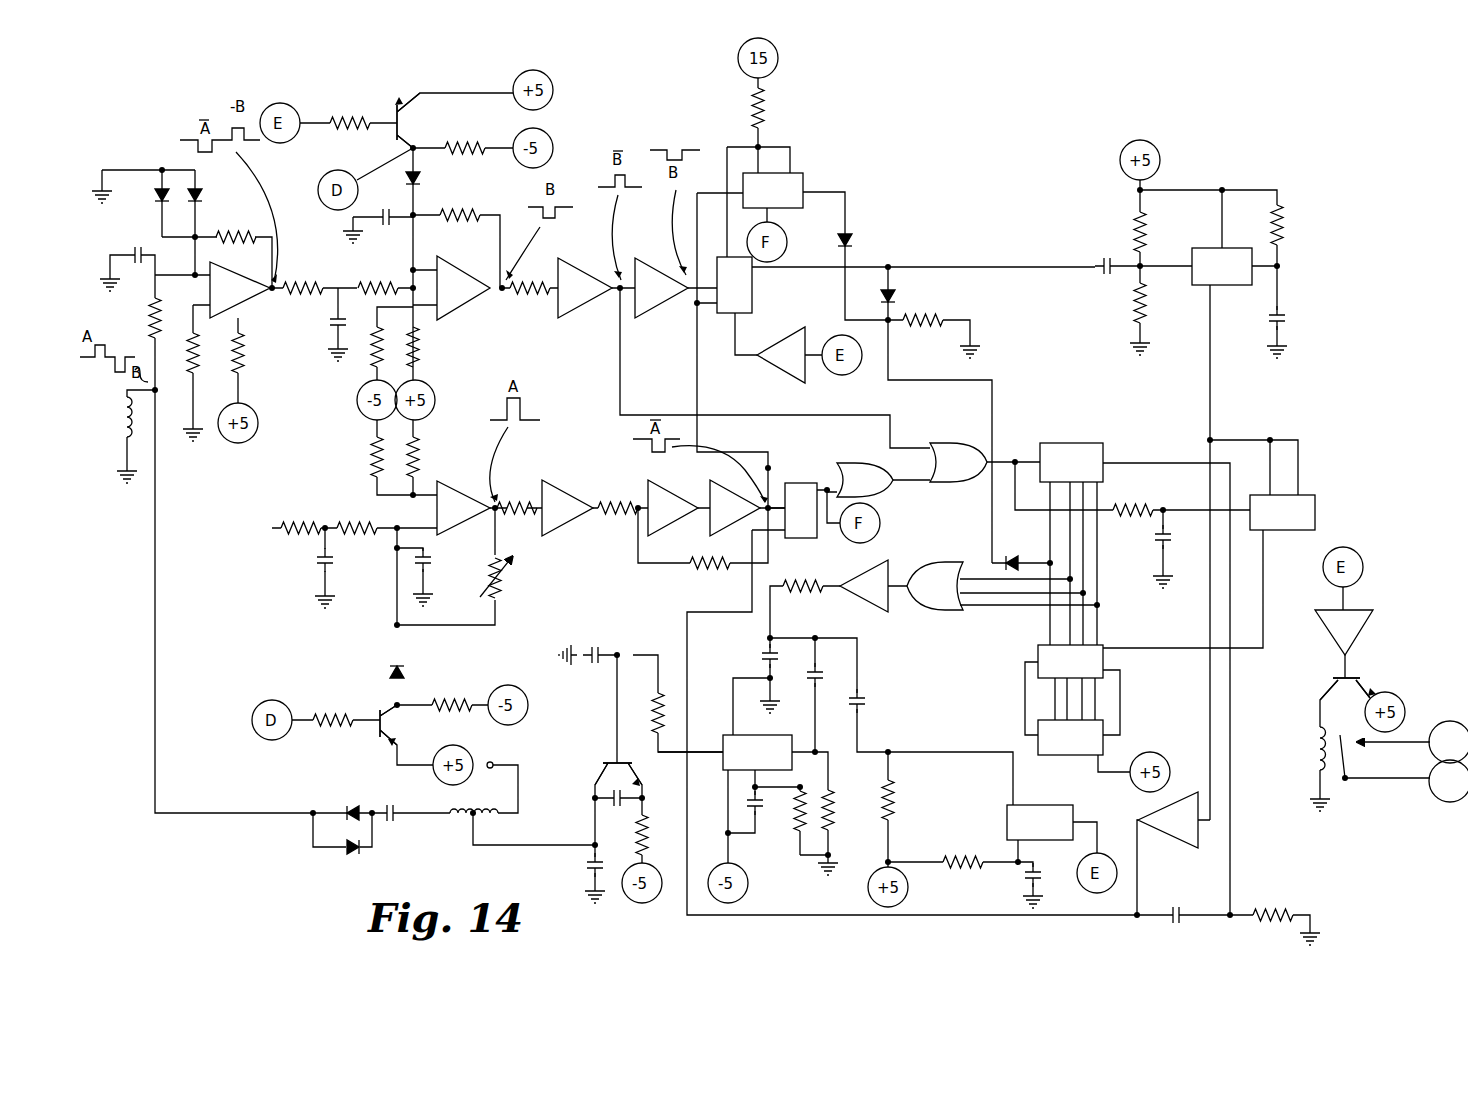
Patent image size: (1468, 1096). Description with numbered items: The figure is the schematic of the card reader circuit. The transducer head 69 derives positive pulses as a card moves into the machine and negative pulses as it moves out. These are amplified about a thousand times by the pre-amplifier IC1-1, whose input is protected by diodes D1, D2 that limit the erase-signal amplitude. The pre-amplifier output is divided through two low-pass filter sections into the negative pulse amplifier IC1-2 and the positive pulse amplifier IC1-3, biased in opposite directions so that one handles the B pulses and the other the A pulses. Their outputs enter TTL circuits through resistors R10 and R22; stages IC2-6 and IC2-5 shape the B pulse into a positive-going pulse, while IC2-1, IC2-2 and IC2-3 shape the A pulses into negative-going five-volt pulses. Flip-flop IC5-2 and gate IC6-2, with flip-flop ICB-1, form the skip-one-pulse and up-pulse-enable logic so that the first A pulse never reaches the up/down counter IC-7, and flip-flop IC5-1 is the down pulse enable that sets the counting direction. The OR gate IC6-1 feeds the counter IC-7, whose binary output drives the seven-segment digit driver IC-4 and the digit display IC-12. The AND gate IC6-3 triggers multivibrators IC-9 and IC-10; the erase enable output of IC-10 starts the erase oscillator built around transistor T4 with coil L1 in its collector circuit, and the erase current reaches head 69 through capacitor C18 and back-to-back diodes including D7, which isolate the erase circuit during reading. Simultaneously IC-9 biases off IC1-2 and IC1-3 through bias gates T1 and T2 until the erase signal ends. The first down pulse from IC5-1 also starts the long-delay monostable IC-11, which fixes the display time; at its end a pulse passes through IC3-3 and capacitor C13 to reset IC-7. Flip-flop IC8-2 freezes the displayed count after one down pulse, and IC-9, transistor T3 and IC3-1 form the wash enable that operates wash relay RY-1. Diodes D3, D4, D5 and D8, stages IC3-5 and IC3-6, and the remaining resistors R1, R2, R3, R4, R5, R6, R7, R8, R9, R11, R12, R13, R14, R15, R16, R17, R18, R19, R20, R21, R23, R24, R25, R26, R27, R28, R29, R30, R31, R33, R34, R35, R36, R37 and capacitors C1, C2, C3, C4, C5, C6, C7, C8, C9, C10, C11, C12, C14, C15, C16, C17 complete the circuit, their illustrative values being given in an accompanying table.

The transducer head 69 is at (109, 417).
The diode D1 is at (148, 197).
The diode D2 is at (276, 504).
The diode D3 is at (427, 180).
The diode D4 is at (859, 241).
The diode D5 is at (627, 484).
The diode D7 is at (353, 862).
The diode D8 is at (1013, 554).
The bias gate T1 is at (410, 120).
The bias gate T2 is at (399, 725).
The wash enable transistor T3 is at (1339, 679).
The erase oscillator transistor T4 is at (607, 765).
The resistor R1 is at (143, 318).
The resistor R2 is at (236, 229).
The resistor R3 is at (182, 353).
The resistor R4 is at (251, 353).
The resistor R5 is at (303, 280).
The resistor R6 is at (378, 280).
The resistor R7 is at (350, 113).
The resistor R8 is at (465, 139).
The resistor R9 is at (460, 206).
The resistor R10 is at (530, 279).
The resistor R11 is at (775, 108).
The resistor R12 is at (923, 312).
The resistor R13 is at (1157, 232).
The resistor R14 is at (1157, 303).
The resistor R15 is at (1295, 225).
The resistor R16 is at (1133, 501).
The resistor R17 is at (301, 520).
The resistor R18 is at (357, 520).
The variable resistor R19 is at (507, 577).
The resistor R20 is at (452, 697).
The resistor R21 is at (333, 712).
The resistor R22 is at (517, 500).
The resistor R23 is at (618, 500).
The resistor R24 is at (710, 573).
The resistor R25 is at (803, 577).
The resistor R26 is at (846, 810).
The resistor R27 is at (873, 800).
The resistor R28 is at (1273, 904).
The resistor R29 is at (963, 853).
The resistor R30 is at (645, 713).
The resistor R31 is at (659, 835).
The resistor R33 is at (787, 822).
The resistor R34 is at (364, 347).
The resistor R35 is at (431, 347).
The resistor R36 is at (361, 457).
The resistor R37 is at (431, 457).
The capacitor C1 is at (134, 246).
The capacitor C2 is at (328, 322).
The capacitor C3 is at (386, 228).
The capacitor C4 is at (1104, 262).
The capacitor C5 is at (1290, 318).
The capacitor C6 is at (1175, 537).
The capacitor C7 is at (313, 560).
The capacitor C8 is at (437, 560).
The capacitor C9 is at (758, 656).
The capacitor C10 is at (805, 672).
The capacitor C11 is at (874, 697).
The capacitor C12 is at (1017, 875).
The capacitor C13 is at (1174, 909).
The capacitor C14 is at (769, 803).
The capacitor C15 is at (597, 644).
The capacitor C16 is at (617, 809).
The capacitor C17 is at (576, 865).
The capacitor C18 is at (395, 824).
The coil L1 is at (471, 827).
The wash relay RY-1 is at (1346, 752).
The pre-amplifier IC1-1 is at (240, 290).
The negative pulse amplifier IC1-2 is at (463, 287).
The positive pulse amplifier IC1-3 is at (463, 507).
The integrated circuit IC2-1 is at (567, 506).
The integrated circuit IC2-2 is at (675, 506).
The integrated circuit IC2-3 is at (735, 506).
The integrated circuit IC2-5 is at (661, 286).
The integrated circuit IC2-6 is at (585, 286).
The integrated circuit IC3-1 is at (1353, 634).
The integrated circuit IC3-3 is at (1168, 822).
The integrated circuit IC3-5 is at (779, 349).
The integrated circuit IC3-6 is at (862, 579).
The seven segment digit driver IC-4 is at (1070, 661).
The down pulse enable IC5-1 is at (734, 285).
The skip one pulse flip-flop IC5-2 is at (801, 510).
The OR gate IC6-1 is at (957, 453).
The gate IC6-2 is at (865, 470).
The AND gate IC6-3 is at (935, 576).
The up/down counter IC-7 is at (1071, 462).
The up pulse enable flip-flop ICB-1 is at (773, 190).
The skip one down pulse circuit IC8-2 is at (1282, 512).
The multivibrator IC-9 is at (1040, 822).
The erase enable multivibrator IC-10 is at (757, 752).
The long delay reset monostable IC-11 is at (1222, 266).
The seven segment digit display IC-12 is at (1070, 737).